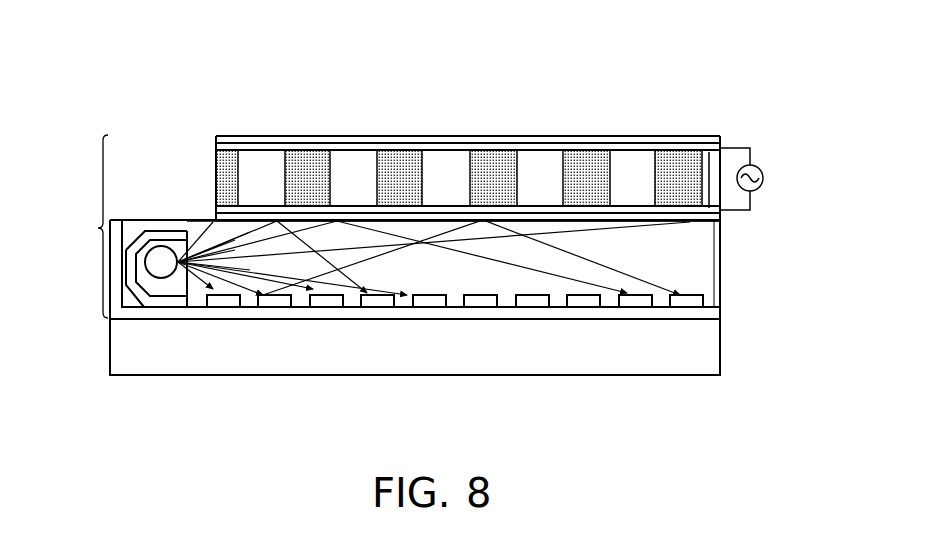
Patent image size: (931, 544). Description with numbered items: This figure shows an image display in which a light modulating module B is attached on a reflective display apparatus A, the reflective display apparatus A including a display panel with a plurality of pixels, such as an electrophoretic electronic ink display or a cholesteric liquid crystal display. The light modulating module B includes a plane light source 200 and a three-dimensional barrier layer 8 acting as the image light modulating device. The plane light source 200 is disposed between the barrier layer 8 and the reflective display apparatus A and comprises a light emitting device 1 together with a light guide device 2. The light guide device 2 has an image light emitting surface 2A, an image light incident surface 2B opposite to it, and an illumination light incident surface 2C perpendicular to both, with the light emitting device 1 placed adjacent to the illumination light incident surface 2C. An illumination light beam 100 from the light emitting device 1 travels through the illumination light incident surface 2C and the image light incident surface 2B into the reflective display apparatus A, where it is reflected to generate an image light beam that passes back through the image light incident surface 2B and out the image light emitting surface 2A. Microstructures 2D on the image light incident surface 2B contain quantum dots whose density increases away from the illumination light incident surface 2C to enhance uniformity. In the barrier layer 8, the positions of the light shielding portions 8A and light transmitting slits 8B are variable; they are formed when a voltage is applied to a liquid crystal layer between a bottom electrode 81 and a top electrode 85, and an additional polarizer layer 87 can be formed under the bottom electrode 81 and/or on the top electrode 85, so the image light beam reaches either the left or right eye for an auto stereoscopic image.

The light emitting device 1 is at (155, 273).
The light guide device 2 is at (677, 274).
The image light emitting surface 2A is at (713, 140).
The image light incident surface 2B is at (711, 307).
The illumination light incident surface 2C is at (187, 282).
The microstructures 2D is at (635, 307).
The 3D barrier layer 8 is at (210, 135).
The light shielding portions 8A is at (680, 167).
The light transmitting slits 8B is at (627, 163).
The bottom electrode 81 is at (678, 213).
The top electrode 85 is at (702, 190).
The polarizer layer 87 is at (698, 140).
The illumination light beam 100 is at (400, 307).
The plane light source 200 is at (722, 285).
The reflective display apparatus A is at (722, 340).
The light modulating module B is at (90, 226).